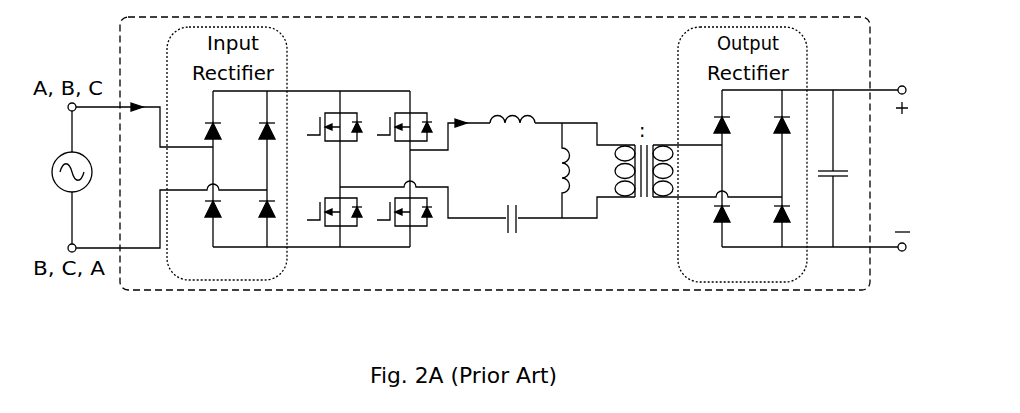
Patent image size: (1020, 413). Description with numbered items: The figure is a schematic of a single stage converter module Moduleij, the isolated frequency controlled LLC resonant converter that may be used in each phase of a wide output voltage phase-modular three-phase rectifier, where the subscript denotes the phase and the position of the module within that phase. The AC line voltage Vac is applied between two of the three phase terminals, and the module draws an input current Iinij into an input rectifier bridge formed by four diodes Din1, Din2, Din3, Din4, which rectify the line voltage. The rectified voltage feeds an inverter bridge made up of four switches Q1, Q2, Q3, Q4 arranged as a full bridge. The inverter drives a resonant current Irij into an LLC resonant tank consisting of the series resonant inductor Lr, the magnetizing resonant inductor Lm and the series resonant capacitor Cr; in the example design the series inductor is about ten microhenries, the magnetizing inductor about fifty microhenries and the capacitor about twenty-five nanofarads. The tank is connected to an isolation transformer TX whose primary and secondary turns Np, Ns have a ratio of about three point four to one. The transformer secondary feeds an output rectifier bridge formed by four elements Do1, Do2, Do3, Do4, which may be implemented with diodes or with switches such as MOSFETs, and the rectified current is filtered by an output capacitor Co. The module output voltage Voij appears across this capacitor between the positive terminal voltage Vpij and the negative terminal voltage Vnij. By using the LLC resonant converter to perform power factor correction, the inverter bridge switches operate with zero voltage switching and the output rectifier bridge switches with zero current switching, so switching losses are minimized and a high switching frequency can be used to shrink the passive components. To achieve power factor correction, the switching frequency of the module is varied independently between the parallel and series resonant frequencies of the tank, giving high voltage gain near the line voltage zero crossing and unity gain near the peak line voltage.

The converter module Moduleij is at (495, 153).
The AC input voltage source Vac is at (49, 177).
The module input current Iinij is at (144, 113).
The input rectifier diode Din1 is at (196, 119).
The input rectifier diode Din2 is at (196, 223).
The input rectifier diode Din3 is at (249, 119).
The input rectifier diode Din4 is at (249, 223).
The inverter bridge switch Q1 is at (327, 120).
The inverter bridge switch Q2 is at (327, 210).
The inverter bridge switch Q3 is at (397, 120).
The inverter bridge switch Q4 is at (397, 210).
The resonant current Irij is at (450, 122).
The series resonant inductor Lr is at (512, 104).
The magnetizing resonant inductor Lm is at (547, 170).
The series resonant capacitor Cr is at (514, 236).
The isolation transformer TX is at (644, 183).
The primary winding turns Np is at (621, 132).
The secondary winding turns Ns is at (660, 132).
The output rectifier diode Do1 is at (706, 115).
The output rectifier diode Do2 is at (706, 227).
The output rectifier diode Do3 is at (765, 115).
The output rectifier diode Do4 is at (766, 227).
The output capacitor Co is at (839, 168).
The positive output terminal voltage Vpij is at (901, 76).
The module output voltage Voij is at (901, 175).
The negative output terminal voltage Vnij is at (901, 264).